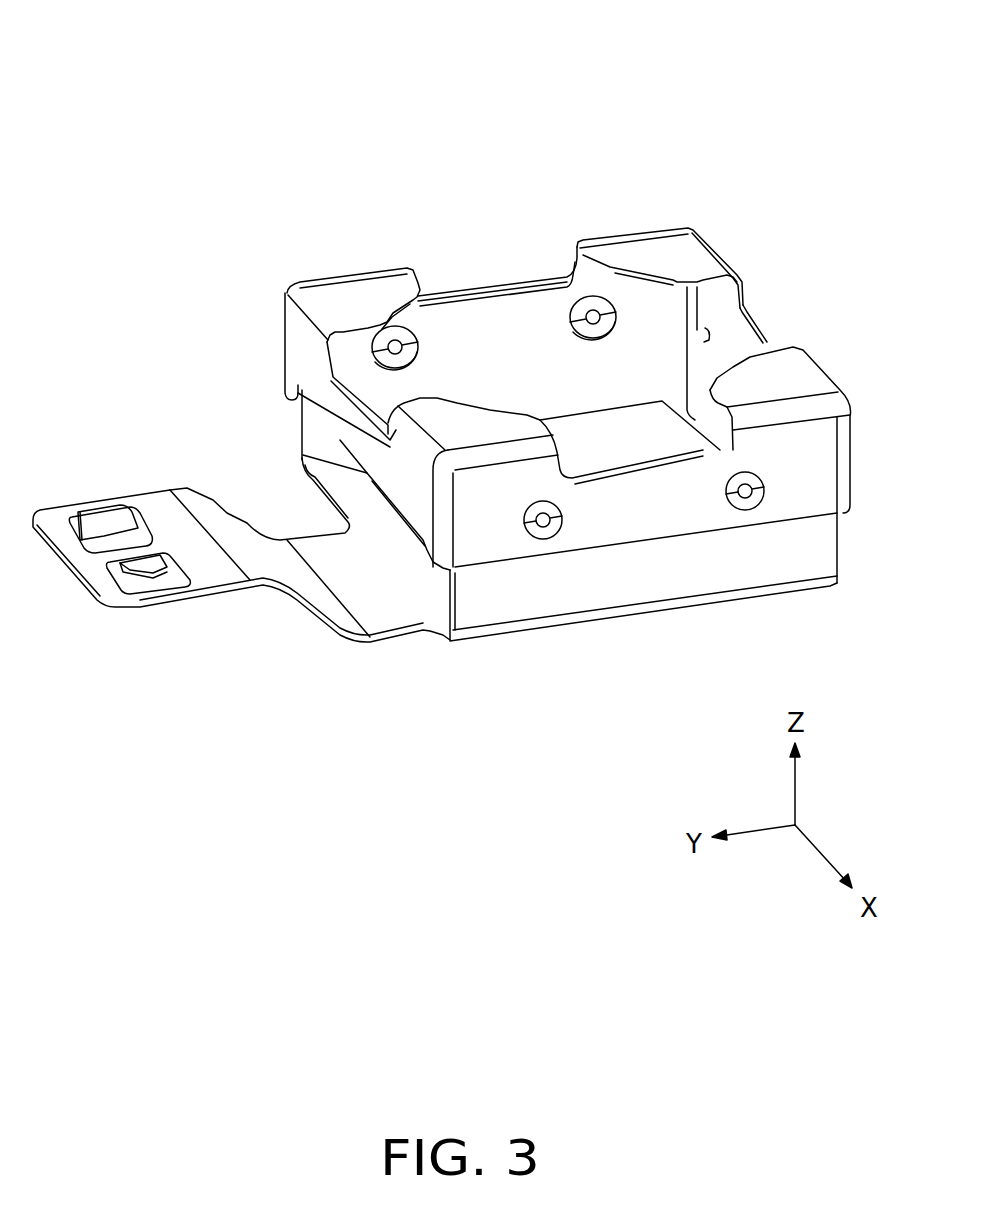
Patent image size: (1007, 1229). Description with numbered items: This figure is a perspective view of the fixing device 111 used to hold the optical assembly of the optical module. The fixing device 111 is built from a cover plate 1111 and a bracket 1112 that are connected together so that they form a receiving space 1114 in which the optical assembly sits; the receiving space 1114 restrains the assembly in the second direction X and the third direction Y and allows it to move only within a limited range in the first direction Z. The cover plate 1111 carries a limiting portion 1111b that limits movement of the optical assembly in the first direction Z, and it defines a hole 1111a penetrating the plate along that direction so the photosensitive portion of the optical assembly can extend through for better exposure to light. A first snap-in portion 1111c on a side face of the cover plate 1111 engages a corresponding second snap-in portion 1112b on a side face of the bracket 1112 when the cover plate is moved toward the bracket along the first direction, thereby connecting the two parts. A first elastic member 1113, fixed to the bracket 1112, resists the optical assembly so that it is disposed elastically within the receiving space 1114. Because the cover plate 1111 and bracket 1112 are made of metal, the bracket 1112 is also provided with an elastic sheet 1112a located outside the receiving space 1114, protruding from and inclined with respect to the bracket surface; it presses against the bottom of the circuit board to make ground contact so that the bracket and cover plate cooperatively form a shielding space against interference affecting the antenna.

The fixing device 111 is at (508, 46).
The cover plate 1111 is at (802, 472).
The hole 1111a is at (479, 341).
The limiting portion 1111b is at (356, 297).
The first snap-in portion 1111c is at (591, 314).
The bracket 1112 is at (802, 557).
The elastic sheet 1112a is at (107, 520).
The second snap-in portion 1112b is at (618, 310).
The first elastic member 1113 is at (660, 438).
The receiving space 1114 is at (656, 365).